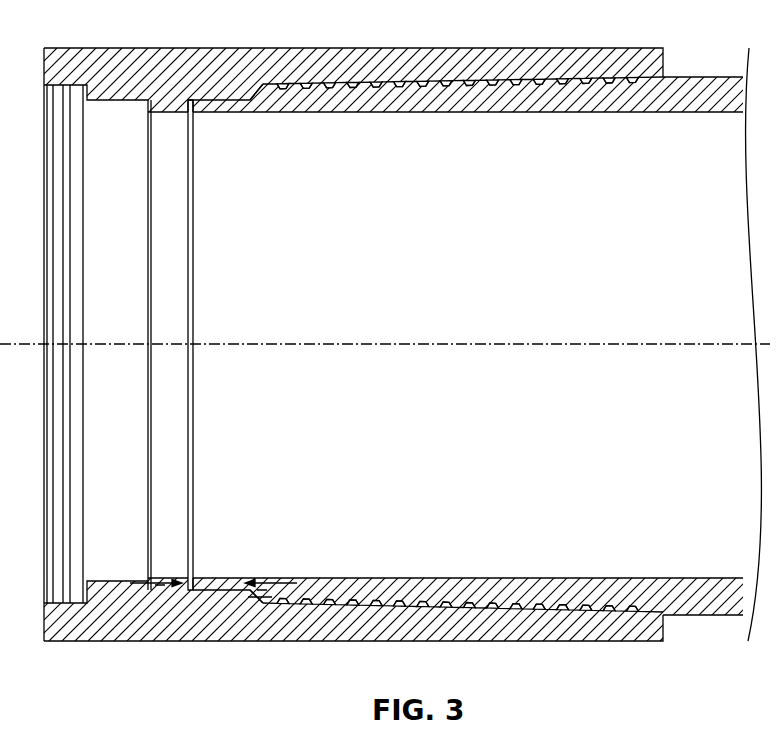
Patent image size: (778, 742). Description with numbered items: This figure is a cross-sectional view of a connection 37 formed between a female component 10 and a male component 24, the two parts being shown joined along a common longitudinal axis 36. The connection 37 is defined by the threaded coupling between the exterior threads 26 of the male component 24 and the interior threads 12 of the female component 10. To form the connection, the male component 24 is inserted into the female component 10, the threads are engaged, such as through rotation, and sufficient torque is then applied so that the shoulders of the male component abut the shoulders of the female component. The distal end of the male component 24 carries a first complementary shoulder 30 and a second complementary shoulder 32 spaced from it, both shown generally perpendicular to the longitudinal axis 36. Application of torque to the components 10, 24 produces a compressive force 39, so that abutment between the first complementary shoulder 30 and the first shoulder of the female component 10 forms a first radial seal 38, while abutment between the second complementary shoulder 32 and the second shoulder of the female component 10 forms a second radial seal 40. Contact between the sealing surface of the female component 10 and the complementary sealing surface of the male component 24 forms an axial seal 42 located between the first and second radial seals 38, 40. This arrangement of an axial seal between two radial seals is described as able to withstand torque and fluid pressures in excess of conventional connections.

The female component 10 is at (360, 625).
The interior threads 12 is at (466, 77).
The male component 24 is at (465, 605).
The exterior threads 26 is at (420, 80).
The first complementary shoulder 30 is at (200, 578).
The second complementary shoulder 32 is at (307, 589).
The longitudinal axis 36 is at (442, 343).
The connection 37 is at (193, 255).
The first radial seal 38 is at (188, 104).
The compressive force 39 is at (262, 590).
The second radial seal 40 is at (251, 97).
The axial seal 42 is at (225, 582).